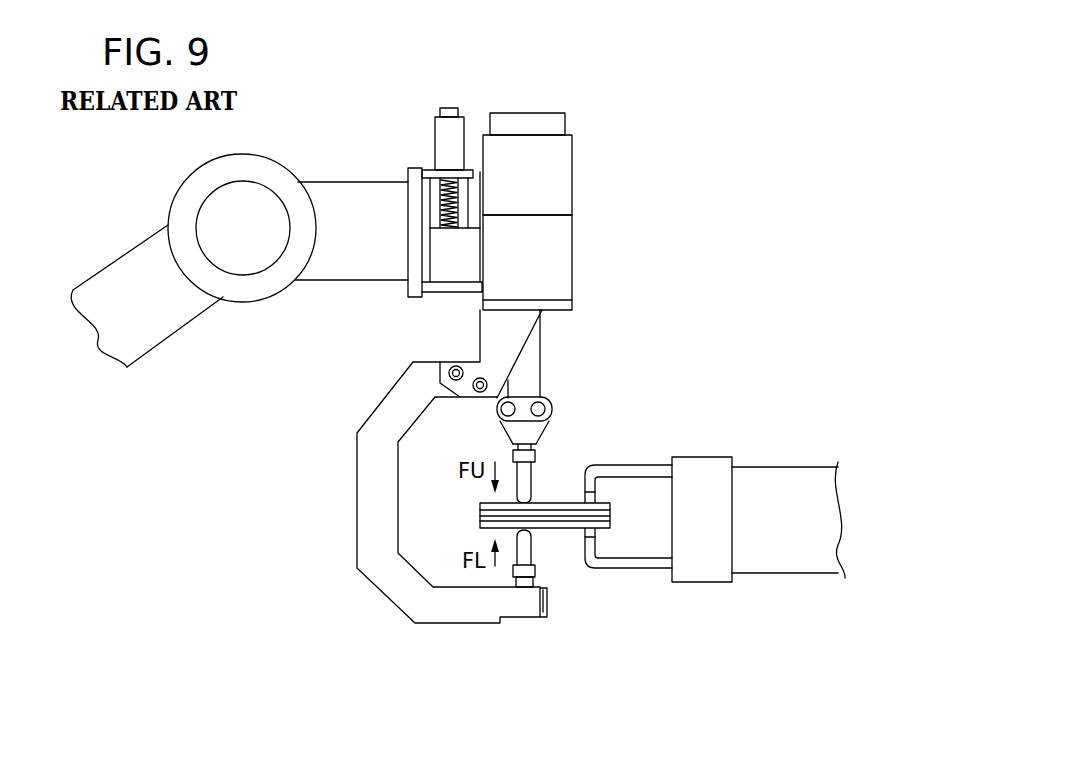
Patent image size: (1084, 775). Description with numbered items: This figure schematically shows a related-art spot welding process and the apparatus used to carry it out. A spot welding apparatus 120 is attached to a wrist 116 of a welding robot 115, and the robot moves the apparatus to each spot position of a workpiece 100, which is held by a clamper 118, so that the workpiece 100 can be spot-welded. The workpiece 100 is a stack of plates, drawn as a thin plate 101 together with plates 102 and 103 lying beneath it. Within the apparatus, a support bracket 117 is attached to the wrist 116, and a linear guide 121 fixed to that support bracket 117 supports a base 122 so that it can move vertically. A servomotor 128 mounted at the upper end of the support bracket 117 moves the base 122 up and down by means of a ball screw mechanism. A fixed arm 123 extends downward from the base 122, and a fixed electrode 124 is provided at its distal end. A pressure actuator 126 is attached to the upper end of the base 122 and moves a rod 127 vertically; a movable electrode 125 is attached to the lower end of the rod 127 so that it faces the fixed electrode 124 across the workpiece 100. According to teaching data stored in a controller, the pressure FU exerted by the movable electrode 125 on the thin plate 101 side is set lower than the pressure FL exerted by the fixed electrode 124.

The workpiece 100 is at (517, 560).
The thin plate 101 is at (480, 504).
The middle plate 102 is at (480, 513).
The lower plate 103 is at (480, 524).
The welding robot 115 is at (114, 238).
The wrist 116 is at (320, 193).
The support bracket 117 is at (410, 288).
The clamper 118 is at (703, 573).
The spot welding apparatus 120 is at (628, 131).
The linear guide 121 is at (430, 175).
The base 122 is at (558, 258).
The fixed arm 123 is at (365, 492).
The fixed electrode 124 is at (527, 550).
The movable electrode 125 is at (525, 478).
The pressure actuator 126 is at (558, 173).
The rod 127 is at (528, 357).
The servomotor 128 is at (442, 132).